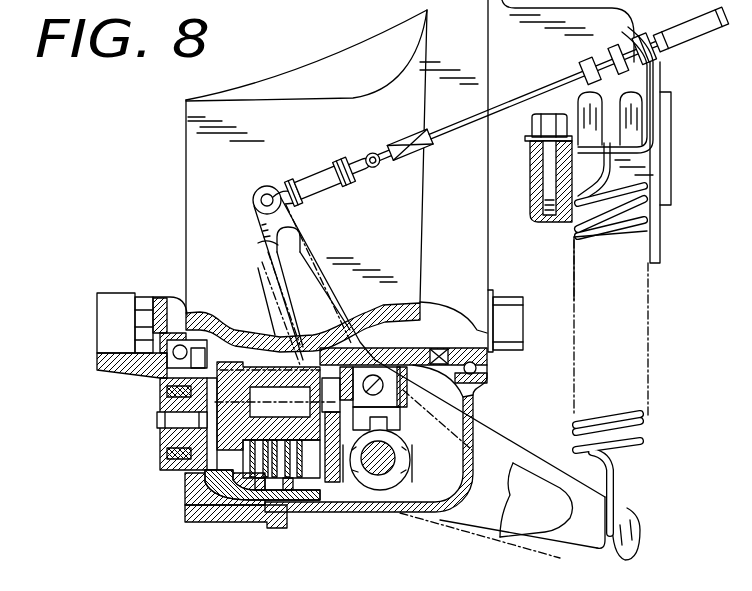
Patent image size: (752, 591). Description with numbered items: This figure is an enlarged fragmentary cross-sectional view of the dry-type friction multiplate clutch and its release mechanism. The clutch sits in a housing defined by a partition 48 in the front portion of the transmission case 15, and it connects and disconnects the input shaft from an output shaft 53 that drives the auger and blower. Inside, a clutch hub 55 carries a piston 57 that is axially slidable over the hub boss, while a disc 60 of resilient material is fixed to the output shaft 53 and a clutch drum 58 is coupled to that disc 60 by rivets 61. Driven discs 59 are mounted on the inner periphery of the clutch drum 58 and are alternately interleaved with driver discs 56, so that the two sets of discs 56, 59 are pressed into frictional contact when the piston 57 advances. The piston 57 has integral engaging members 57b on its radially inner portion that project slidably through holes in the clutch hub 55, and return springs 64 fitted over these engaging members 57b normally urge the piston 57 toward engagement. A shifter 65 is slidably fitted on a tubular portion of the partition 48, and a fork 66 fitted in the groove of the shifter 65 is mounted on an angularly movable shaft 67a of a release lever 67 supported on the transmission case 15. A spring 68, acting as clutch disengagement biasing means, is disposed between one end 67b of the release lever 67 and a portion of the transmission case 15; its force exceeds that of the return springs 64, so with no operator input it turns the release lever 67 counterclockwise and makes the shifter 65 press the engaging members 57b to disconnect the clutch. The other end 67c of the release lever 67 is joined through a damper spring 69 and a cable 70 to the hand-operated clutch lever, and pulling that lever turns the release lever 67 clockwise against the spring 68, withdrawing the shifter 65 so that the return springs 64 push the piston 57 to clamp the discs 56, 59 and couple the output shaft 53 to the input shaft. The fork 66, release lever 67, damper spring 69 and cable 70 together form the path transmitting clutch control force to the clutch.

The transmission case 15 is at (184, 512).
The partition 48 is at (474, 430).
The output shaft 53 is at (97, 360).
The clutch hub 55 is at (207, 488).
The driver discs 56 is at (236, 488).
The piston 57 is at (168, 398).
The engaging members 57b is at (273, 340).
The clutch drum 58 is at (212, 484).
The driven discs 59 is at (268, 492).
The disc 60 is at (165, 389).
The rivets 61 is at (166, 420).
The return springs 64 is at (248, 333).
The shifter 65 is at (408, 400).
The fork 66 is at (408, 458).
The release lever 67 is at (262, 222).
The shaft 67a is at (395, 495).
The one end of release lever 67b is at (640, 513).
The other end of release lever 67c is at (296, 210).
The spring 68 is at (640, 450).
The damper spring 69 is at (296, 174).
The cable 70 is at (522, 97).